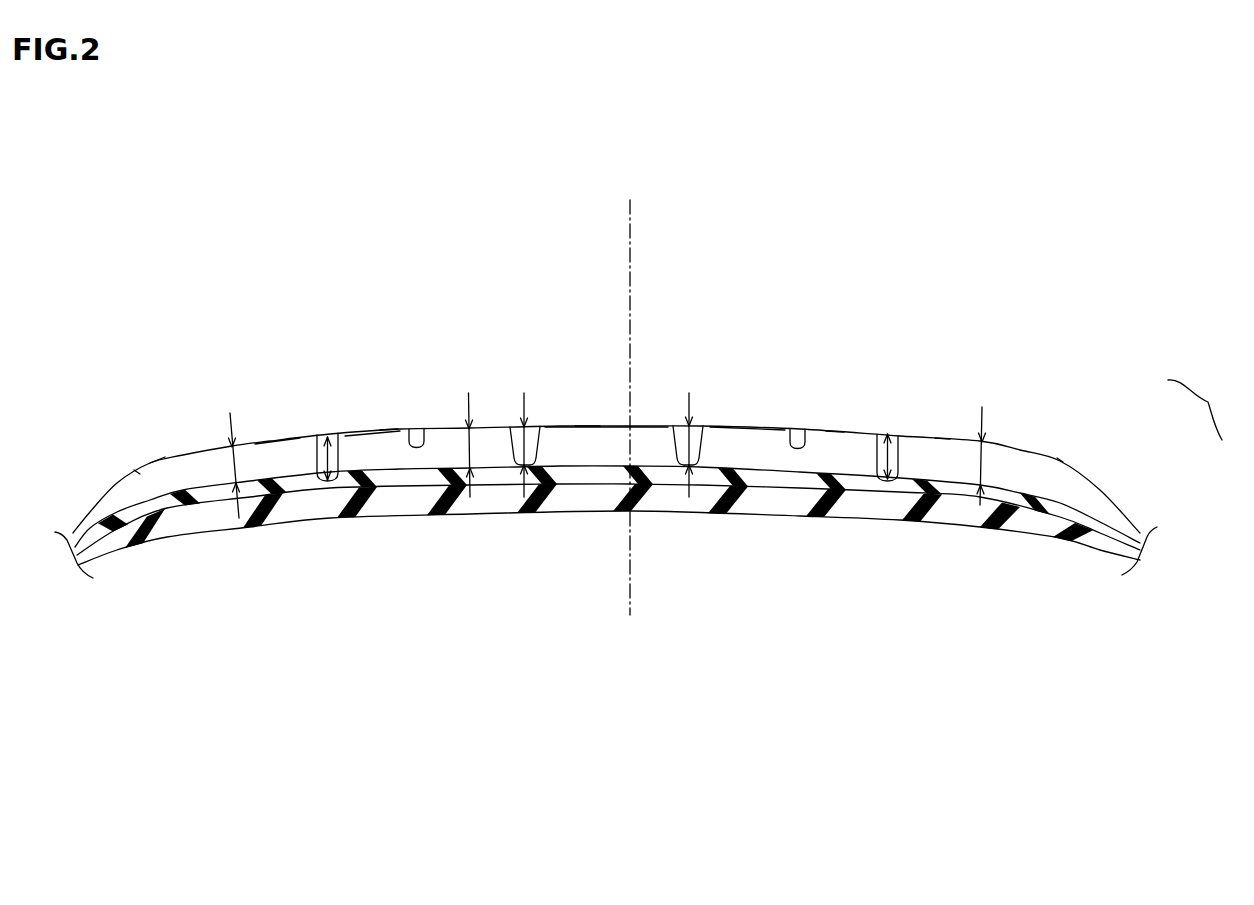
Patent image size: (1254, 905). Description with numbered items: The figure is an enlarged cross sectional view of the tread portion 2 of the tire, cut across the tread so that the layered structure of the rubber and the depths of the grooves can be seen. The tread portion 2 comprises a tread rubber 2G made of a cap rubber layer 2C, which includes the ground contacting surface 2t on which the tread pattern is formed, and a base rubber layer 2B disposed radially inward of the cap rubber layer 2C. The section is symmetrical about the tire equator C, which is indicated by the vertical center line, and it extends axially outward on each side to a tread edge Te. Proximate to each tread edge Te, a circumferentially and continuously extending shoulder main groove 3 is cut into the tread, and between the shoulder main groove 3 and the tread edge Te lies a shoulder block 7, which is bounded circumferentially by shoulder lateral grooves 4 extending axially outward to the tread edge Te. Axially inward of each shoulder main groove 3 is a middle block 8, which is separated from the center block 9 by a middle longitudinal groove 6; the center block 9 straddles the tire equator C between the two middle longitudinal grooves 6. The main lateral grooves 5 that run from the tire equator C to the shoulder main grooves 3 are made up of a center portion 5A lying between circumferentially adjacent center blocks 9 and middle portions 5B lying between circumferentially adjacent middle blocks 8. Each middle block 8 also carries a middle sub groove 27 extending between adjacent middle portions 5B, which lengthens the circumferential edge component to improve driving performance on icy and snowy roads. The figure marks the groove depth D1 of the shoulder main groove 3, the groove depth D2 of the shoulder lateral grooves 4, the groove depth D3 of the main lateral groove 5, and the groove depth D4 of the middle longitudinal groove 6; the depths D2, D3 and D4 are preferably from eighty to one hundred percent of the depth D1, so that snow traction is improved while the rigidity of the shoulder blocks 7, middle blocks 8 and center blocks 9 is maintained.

The tread portion 2 is at (1038, 229).
The ground contacting surface 2t is at (633, 420).
The cap rubber layer 2C is at (1068, 507).
The base rubber layer 2B is at (1067, 527).
The tread rubber 2G is at (1207, 410).
The shoulder main groove 3 is at (335, 436).
The shoulder lateral groove 4 is at (271, 455).
The main lateral groove 5 is at (572, 350).
The center portion 5A is at (653, 442).
The middle portion 5B is at (358, 446).
The middle longitudinal groove 6 is at (539, 427).
The shoulder block 7 is at (157, 455).
The middle block 8 is at (389, 424).
The center block 9 is at (587, 420).
The middle sub groove 27 is at (417, 427).
The tire equator C is at (628, 394).
The tread edge Te is at (137, 472).
The groove depth of the shoulder main groove D1 is at (316, 441).
The groove depth of the shoulder lateral grooves D2 is at (228, 463).
The groove depth of the main lateral groove D3 is at (468, 447).
The groove depth of the middle longitudinal groove D4 is at (522, 446).